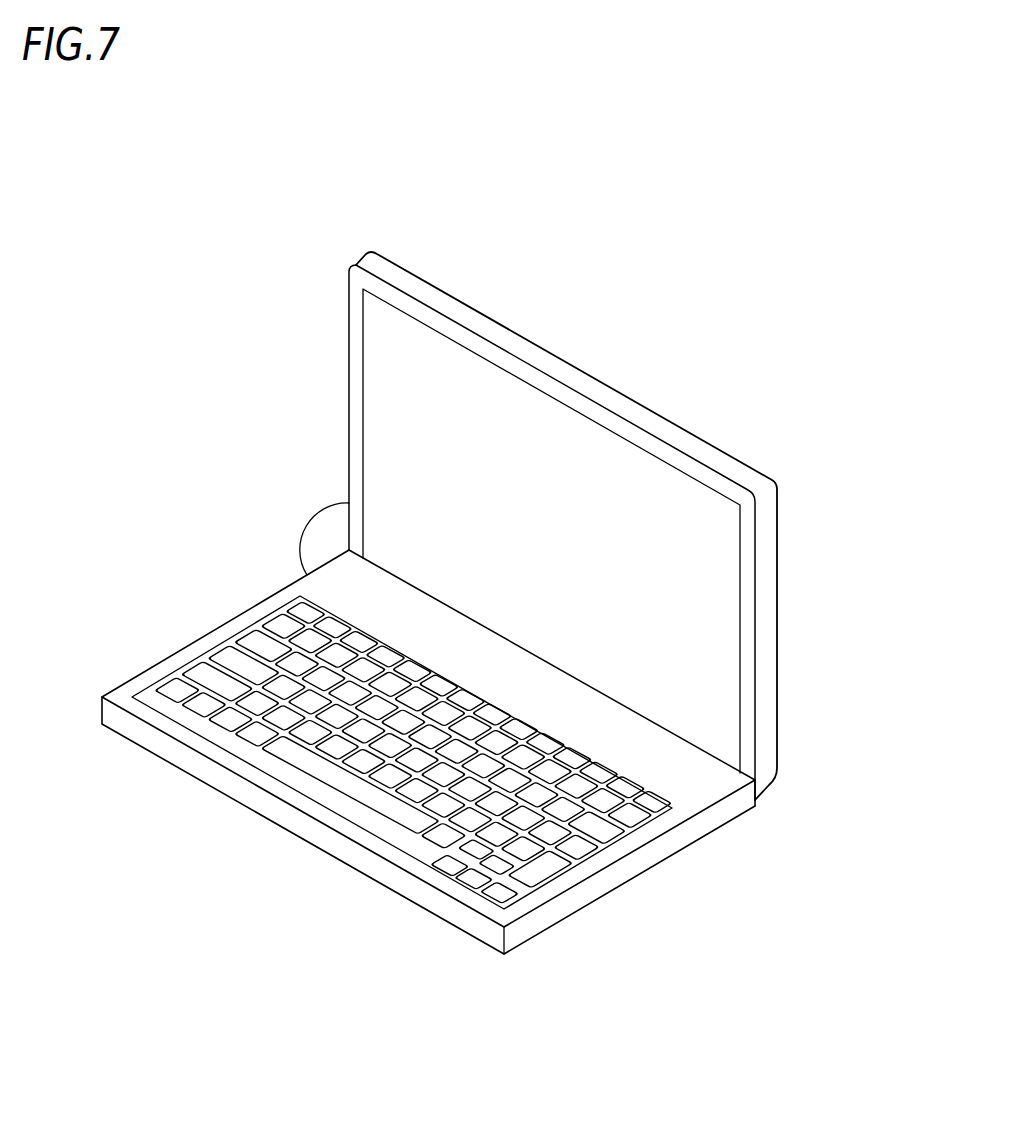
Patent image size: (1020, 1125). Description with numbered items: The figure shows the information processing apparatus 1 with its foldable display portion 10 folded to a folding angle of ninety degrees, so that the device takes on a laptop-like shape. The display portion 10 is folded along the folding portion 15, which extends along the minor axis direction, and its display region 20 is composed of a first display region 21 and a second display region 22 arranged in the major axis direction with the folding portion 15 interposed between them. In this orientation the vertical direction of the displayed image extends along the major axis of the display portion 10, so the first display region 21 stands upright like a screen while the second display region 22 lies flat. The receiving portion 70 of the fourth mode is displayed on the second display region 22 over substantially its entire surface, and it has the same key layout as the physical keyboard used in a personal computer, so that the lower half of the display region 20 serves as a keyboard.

The information processing apparatus 1 is at (851, 250).
The display portion 10 is at (706, 437).
The folding portion 15 is at (650, 722).
The display region 20 is at (181, 438).
The first display region 21 is at (360, 579).
The second display region 22 is at (392, 468).
The receiving portion 70 is at (687, 792).